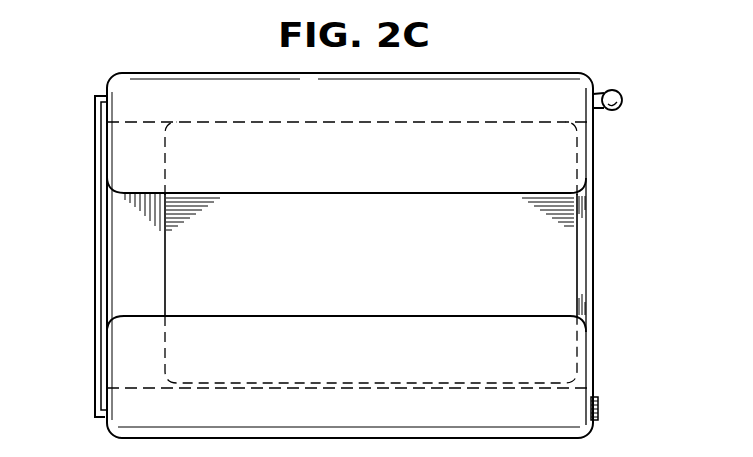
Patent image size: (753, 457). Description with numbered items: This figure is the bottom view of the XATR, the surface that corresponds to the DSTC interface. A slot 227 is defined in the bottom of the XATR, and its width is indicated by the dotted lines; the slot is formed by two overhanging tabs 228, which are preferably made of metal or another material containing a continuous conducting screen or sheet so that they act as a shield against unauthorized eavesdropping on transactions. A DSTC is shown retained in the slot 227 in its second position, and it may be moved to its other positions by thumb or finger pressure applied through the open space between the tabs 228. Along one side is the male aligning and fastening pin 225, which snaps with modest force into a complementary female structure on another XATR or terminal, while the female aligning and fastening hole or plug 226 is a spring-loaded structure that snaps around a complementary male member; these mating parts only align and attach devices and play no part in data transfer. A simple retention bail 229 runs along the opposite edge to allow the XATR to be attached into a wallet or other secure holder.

The element XATR is at (188, 72).
The element DSTC is at (562, 262).
The male aligning and fastening pin 225 is at (617, 92).
The female aligning and fastening hole or plug 226 is at (600, 407).
The slot 227 is at (130, 268).
The overhanging tabs 228 is at (563, 168).
The retention bail 229 is at (95, 235).